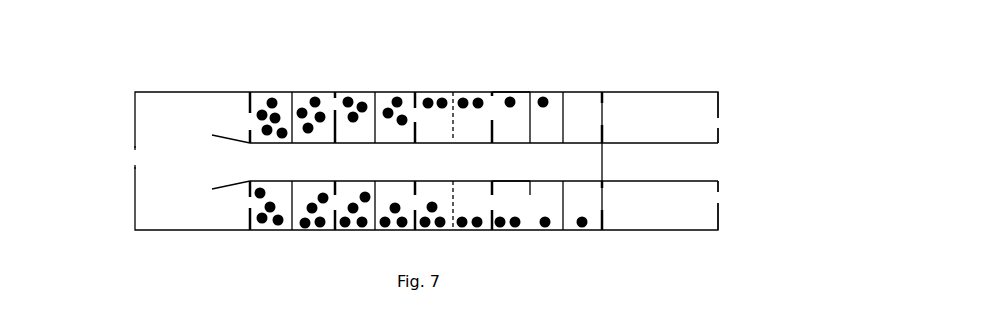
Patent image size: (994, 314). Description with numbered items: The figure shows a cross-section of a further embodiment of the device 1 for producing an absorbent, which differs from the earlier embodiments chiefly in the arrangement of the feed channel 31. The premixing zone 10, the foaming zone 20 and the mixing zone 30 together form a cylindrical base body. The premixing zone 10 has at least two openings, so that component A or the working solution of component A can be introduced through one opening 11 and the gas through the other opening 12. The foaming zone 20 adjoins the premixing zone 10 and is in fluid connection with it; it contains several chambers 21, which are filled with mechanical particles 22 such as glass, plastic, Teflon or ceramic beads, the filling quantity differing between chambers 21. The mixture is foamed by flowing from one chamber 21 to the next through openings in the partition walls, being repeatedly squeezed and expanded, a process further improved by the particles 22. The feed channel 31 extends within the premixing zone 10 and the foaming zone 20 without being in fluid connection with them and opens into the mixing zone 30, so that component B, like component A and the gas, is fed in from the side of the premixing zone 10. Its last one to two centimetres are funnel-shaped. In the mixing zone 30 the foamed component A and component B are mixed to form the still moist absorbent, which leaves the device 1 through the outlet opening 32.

The device 1 is at (77, 73).
The premixing zone 10 is at (677, 132).
The opening 11 is at (730, 127).
The opening 12 is at (730, 197).
The foaming zone 20 is at (472, 136).
The chambers 21 is at (592, 202).
The mechanical particles 22 is at (318, 227).
The mixing zone 30 is at (185, 126).
The feed channel 31 is at (468, 171).
The outlet opening 32 is at (133, 155).